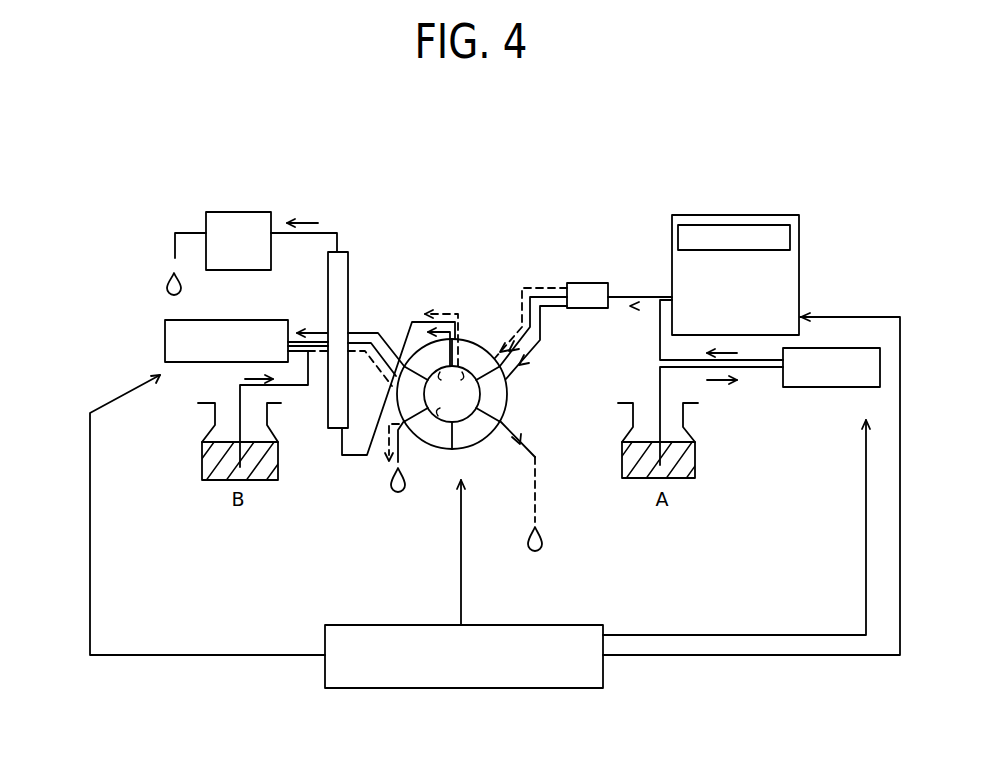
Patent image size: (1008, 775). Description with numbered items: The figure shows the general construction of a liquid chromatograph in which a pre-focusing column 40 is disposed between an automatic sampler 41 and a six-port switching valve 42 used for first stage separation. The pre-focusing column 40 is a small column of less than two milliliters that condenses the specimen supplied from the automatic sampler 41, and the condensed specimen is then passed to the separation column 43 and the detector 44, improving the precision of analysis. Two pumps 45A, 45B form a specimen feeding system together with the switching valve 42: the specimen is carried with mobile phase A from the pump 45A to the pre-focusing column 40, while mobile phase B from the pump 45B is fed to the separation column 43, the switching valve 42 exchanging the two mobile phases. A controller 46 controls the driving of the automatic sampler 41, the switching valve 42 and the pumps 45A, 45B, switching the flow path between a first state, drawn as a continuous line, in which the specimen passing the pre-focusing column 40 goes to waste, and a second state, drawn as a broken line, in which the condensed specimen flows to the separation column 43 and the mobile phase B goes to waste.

The pre-focusing column 40 is at (590, 308).
The automatic sampler 41 is at (799, 240).
The switching valve 42 is at (485, 320).
The separation column 43 is at (348, 267).
The detector 44 is at (206, 222).
The pump A 45A is at (833, 387).
The pump B 45B is at (165, 343).
The controller 46 is at (530, 688).